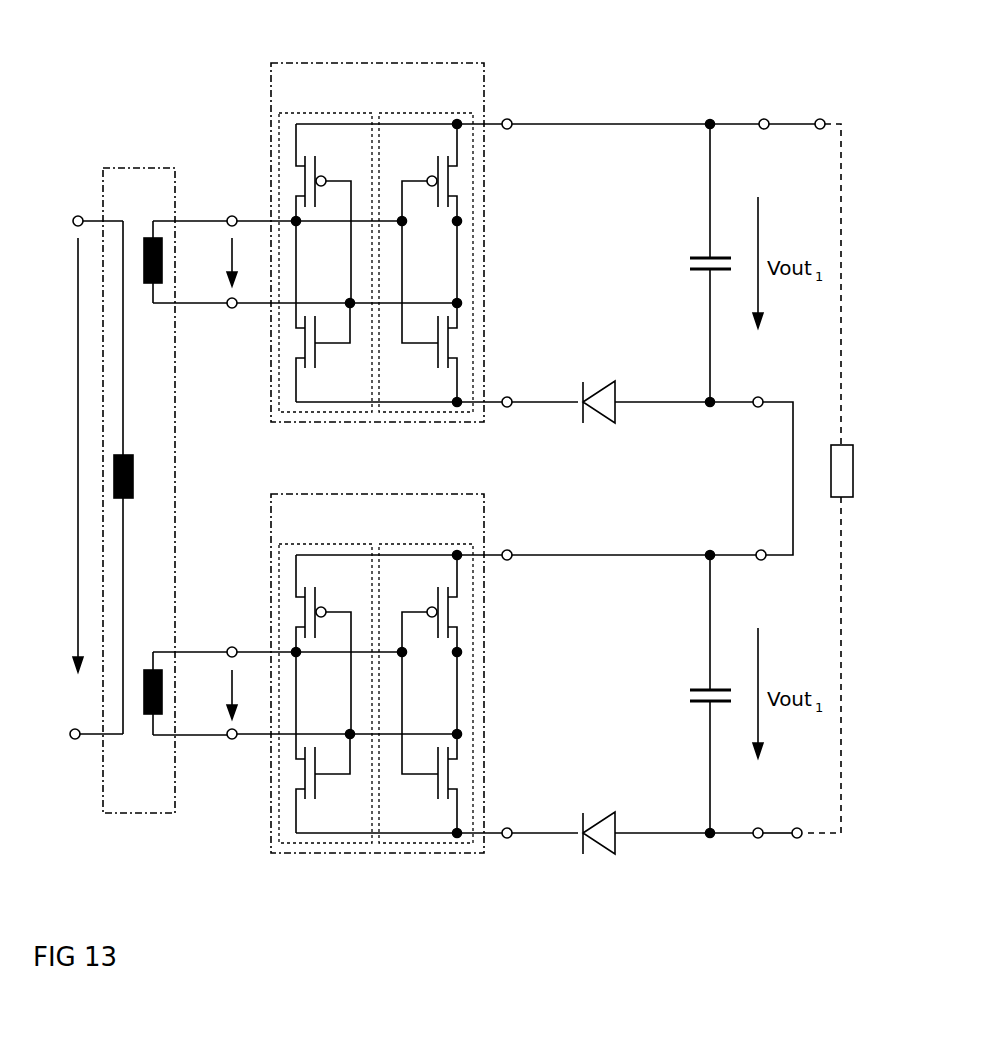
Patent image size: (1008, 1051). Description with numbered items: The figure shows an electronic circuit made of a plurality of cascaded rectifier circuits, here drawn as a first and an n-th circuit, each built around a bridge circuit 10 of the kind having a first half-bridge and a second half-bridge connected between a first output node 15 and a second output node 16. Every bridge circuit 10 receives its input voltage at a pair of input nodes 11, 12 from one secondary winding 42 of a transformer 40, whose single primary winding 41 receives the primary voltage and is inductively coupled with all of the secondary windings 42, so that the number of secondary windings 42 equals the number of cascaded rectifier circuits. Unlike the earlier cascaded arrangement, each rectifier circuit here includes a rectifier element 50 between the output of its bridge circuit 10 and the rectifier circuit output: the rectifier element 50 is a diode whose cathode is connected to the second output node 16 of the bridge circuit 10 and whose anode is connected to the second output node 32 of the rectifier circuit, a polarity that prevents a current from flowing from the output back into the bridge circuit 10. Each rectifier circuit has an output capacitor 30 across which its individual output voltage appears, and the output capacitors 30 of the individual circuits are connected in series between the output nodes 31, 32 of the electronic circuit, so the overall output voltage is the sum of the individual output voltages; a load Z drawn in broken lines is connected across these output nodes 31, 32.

The bridge circuit 10 is at (386, 433).
The input node 11 is at (254, 415).
The input node 12 is at (281, 551).
The first output node 15 is at (603, 318).
The second output node 16 is at (540, 646).
The output capacitor 30 is at (669, 479).
The first output node 31 is at (776, 318).
The second output node 32 is at (758, 595).
The transformer 40 is at (141, 168).
The primary winding 41 is at (127, 455).
The secondary winding 42 is at (172, 500).
The rectifier element 50 is at (644, 598).
The load impedance Z is at (855, 473).